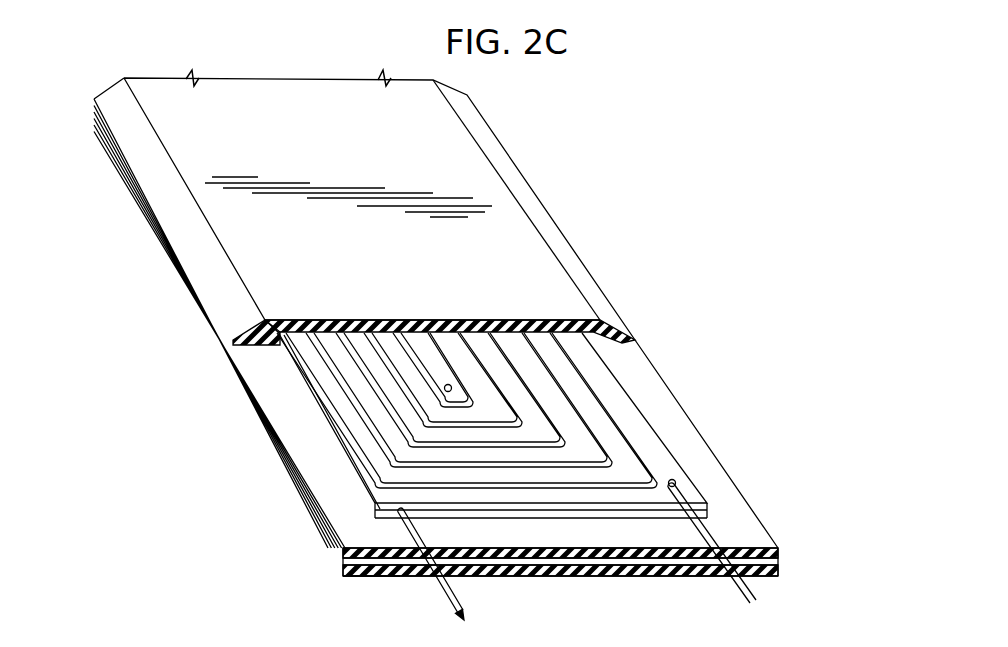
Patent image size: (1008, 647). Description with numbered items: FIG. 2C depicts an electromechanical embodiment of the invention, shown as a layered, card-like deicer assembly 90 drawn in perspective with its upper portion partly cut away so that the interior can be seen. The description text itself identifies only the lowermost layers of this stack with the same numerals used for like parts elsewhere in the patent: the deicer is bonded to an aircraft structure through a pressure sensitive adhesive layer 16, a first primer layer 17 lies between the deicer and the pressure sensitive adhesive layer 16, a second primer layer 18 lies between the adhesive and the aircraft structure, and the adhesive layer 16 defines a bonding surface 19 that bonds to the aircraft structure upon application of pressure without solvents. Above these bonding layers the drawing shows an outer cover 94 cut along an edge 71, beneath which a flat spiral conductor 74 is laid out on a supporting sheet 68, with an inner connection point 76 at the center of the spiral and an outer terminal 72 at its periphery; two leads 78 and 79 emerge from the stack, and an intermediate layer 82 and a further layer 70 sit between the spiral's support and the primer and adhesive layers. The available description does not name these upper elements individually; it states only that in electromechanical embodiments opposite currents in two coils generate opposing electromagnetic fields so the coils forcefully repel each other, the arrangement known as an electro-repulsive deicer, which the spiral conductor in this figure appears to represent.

The laminated card assembly 90 is at (550, 165).
The top cover layer 94 is at (525, 240).
The cut edge of cover layer 71 is at (560, 320).
The antenna coil 74 is at (578, 390).
The coil inner terminal via 76 is at (450, 385).
The coil substrate 68 is at (620, 402).
The coil outer terminal pad 72 is at (693, 491).
The lead wire 78 is at (753, 592).
The lead wire 79 is at (447, 600).
The intermediate layer 82 is at (567, 519).
The adhesive layer 70 is at (668, 553).
The first primer layer 17 is at (710, 566).
The pressure sensitive adhesive layer 16 is at (518, 570).
The second primer layer 18 is at (392, 577).
The bonding surface 19 is at (367, 578).